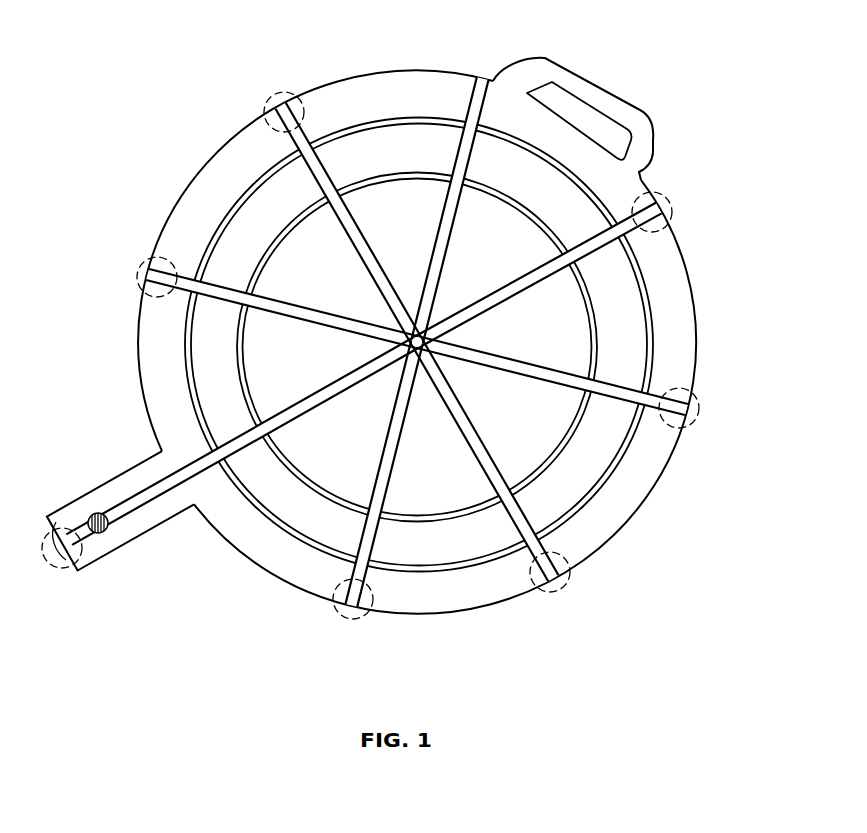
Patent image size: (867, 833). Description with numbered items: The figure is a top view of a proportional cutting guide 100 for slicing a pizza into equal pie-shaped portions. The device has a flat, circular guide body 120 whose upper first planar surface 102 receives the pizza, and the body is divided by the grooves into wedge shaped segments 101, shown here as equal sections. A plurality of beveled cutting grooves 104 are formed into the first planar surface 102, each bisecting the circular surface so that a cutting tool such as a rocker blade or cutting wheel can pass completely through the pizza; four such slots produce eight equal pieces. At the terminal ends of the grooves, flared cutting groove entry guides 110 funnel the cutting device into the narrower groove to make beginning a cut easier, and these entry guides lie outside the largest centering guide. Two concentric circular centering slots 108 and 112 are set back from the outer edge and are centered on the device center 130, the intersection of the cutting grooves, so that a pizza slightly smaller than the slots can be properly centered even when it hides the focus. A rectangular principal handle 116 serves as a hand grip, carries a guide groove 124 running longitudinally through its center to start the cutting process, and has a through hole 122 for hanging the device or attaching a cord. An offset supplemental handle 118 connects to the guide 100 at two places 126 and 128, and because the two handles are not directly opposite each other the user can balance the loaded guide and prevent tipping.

The proportional cutting guide 100 is at (397, 343).
The wedge shaped segments 101 is at (405, 341).
The first planar surface 102 is at (365, 111).
The cutting grooves 104 is at (355, 262).
The circular centering slot 108 is at (580, 430).
The cutting groove entry guides 110 is at (292, 94).
The circular centering slot 112 is at (592, 497).
The principal handle 116 is at (169, 524).
The supplemental handle 118 is at (610, 111).
The guide body 120 is at (141, 383).
The through hole 122 is at (95, 515).
The guide groove 124 is at (204, 480).
The connection place 126 is at (515, 84).
The connection place 128 is at (634, 170).
The device center 130 is at (415, 338).